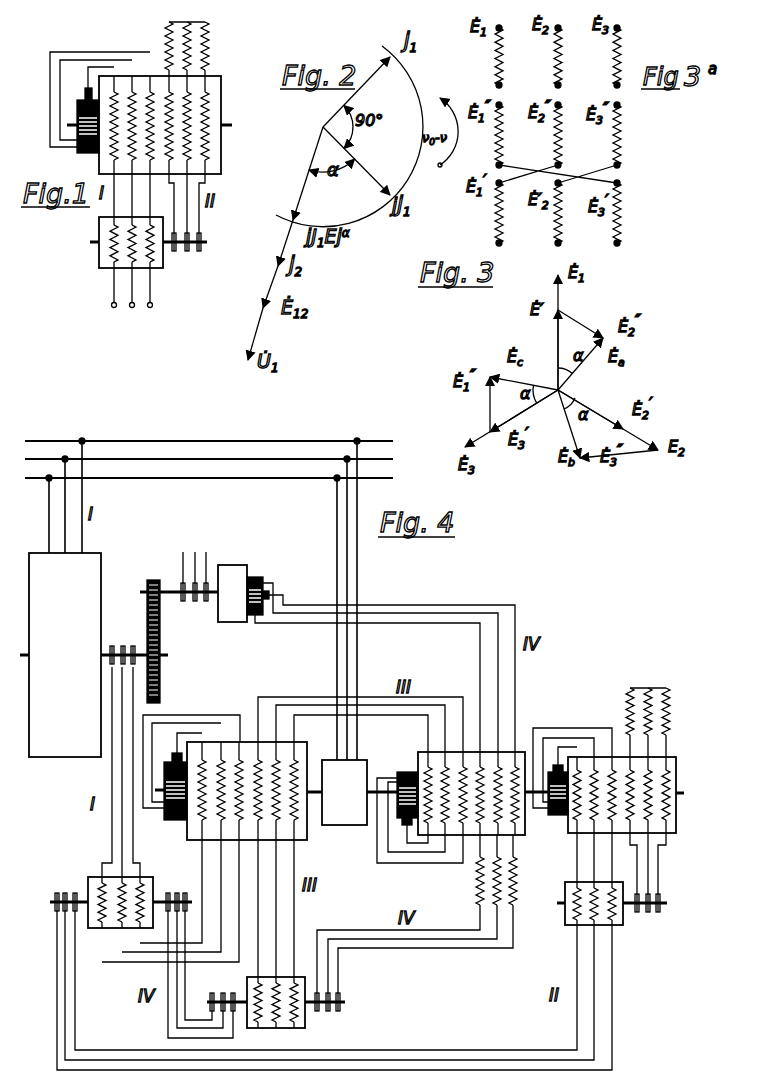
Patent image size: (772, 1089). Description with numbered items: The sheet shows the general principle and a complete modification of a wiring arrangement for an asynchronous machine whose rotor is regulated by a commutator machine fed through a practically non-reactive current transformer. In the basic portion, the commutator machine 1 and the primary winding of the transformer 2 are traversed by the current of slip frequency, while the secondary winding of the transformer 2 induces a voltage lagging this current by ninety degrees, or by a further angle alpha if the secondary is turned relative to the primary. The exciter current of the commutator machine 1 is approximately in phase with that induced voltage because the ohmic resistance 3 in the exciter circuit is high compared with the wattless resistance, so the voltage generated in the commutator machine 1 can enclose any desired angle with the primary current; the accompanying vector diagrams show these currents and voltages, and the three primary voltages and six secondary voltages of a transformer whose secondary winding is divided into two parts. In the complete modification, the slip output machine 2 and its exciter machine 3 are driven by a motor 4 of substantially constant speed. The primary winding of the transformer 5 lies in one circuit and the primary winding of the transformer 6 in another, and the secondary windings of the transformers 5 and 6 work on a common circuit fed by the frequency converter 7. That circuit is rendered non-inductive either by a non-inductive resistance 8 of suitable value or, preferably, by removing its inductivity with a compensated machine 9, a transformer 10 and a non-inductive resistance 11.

In FIG. 1, the commutator machine 1 is at (140, 88).
In FIG. 4, the commutator machine 1 is at (99, 591).
In FIG. 1, the transformer 2 is at (98, 222).
In FIG. 4, the transformer 2 is at (250, 748).
In FIG. 1, the ohmic resistance 3 is at (206, 37).
In FIG. 4, the ohmic resistance 3 is at (520, 753).
In FIG. 4, the motor 4 is at (366, 770).
In FIG. 4, the transformer 5 is at (153, 889).
In FIG. 4, the transformer 6 is at (304, 1023).
In FIG. 4, the frequency converter 7 is at (238, 573).
In FIG. 4, the non-inductive resistance 8 is at (478, 892).
In FIG. 4, the compensated machine 9 is at (572, 826).
In FIG. 4, the transformer 10 is at (566, 920).
In FIG. 4, the non-inductive resistance 11 is at (629, 707).